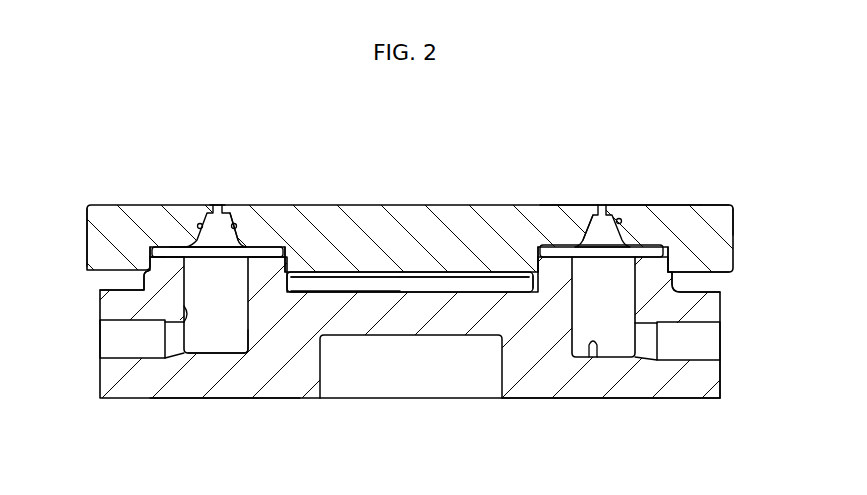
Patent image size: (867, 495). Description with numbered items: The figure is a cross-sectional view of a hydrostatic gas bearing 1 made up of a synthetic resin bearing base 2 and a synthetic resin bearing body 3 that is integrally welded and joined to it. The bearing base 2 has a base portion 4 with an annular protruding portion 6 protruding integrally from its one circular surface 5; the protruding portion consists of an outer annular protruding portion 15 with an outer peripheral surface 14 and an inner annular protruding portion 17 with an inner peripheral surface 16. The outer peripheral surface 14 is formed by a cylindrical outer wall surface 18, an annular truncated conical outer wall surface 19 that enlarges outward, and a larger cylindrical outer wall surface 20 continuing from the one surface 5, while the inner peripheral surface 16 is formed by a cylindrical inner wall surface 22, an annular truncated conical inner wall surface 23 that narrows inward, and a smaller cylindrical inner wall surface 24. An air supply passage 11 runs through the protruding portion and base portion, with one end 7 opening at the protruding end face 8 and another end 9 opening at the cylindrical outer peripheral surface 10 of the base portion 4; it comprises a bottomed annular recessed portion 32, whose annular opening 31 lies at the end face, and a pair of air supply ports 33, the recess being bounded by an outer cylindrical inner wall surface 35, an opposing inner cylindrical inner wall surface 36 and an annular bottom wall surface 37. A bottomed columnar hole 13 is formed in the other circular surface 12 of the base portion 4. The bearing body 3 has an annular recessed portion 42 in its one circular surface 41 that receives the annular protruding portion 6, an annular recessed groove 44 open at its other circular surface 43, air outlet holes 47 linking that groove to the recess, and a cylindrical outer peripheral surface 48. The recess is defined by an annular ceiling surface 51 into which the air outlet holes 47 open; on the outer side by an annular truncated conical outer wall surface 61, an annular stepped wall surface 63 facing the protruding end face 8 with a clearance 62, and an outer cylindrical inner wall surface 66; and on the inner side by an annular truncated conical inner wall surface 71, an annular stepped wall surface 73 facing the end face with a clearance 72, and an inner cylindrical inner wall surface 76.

The hydrostatic gas bearing 1 is at (70, 212).
The bearing base 2 is at (110, 405).
The bearing body 3 is at (570, 202).
The base portion 4 is at (552, 372).
The one circular surface 5 is at (717, 292).
The annular protruding portion 6 is at (695, 204).
The one end 7 is at (262, 247).
The protruding end face 8 is at (163, 256).
The another end 9 is at (112, 351).
The cylindrical outer peripheral surface 10 is at (722, 376).
The air supply passage 11 is at (250, 356).
The another circular surface 12 is at (196, 398).
The bottomed columnar hole 13 is at (400, 370).
The outer peripheral surface 14 is at (139, 285).
The outer annular protruding portion 15 is at (712, 213).
The inner peripheral surface 16 is at (528, 282).
The inner annular protruding portion 17 is at (598, 214).
The cylindrical outer wall surface 18 is at (676, 233).
The annular truncated conical outer wall surface 19 is at (677, 258).
The cylindrical outer wall surface 20 is at (692, 274).
The cylindrical inner wall surface 22 is at (297, 273).
The annular truncated conical inner wall surface 23 is at (303, 279).
The cylindrical inner wall surface 24 is at (300, 288).
The annular opening 31 is at (190, 243).
The bottomed annular recessed portion 32 is at (602, 294).
The air supply ports 33 is at (105, 362).
The outer cylindrical inner wall surface 35 is at (186, 312).
The inner cylindrical inner wall surface 36 is at (236, 355).
The annular bottom wall surface 37 is at (597, 346).
The one circular surface 41 is at (470, 282).
The annular recessed portion 42 is at (659, 250).
The another circular surface 43 is at (703, 206).
The annular recessed groove 44 is at (232, 212).
The air outlet holes 47 is at (217, 204).
The cylindrical outer peripheral surface 48 is at (87, 229).
The annular ceiling surface 51 is at (623, 221).
The annular truncated conical outer wall surface 61 is at (199, 223).
The clearance 62 is at (152, 246).
The annular stepped wall surface 63 is at (180, 246).
The outer cylindrical inner wall surface 66 is at (159, 262).
The annular truncated conical inner wall surface 71 is at (237, 225).
The clearance 72 is at (541, 266).
The annular stepped wall surface 73 is at (284, 250).
The inner cylindrical inner wall surface 76 is at (290, 274).